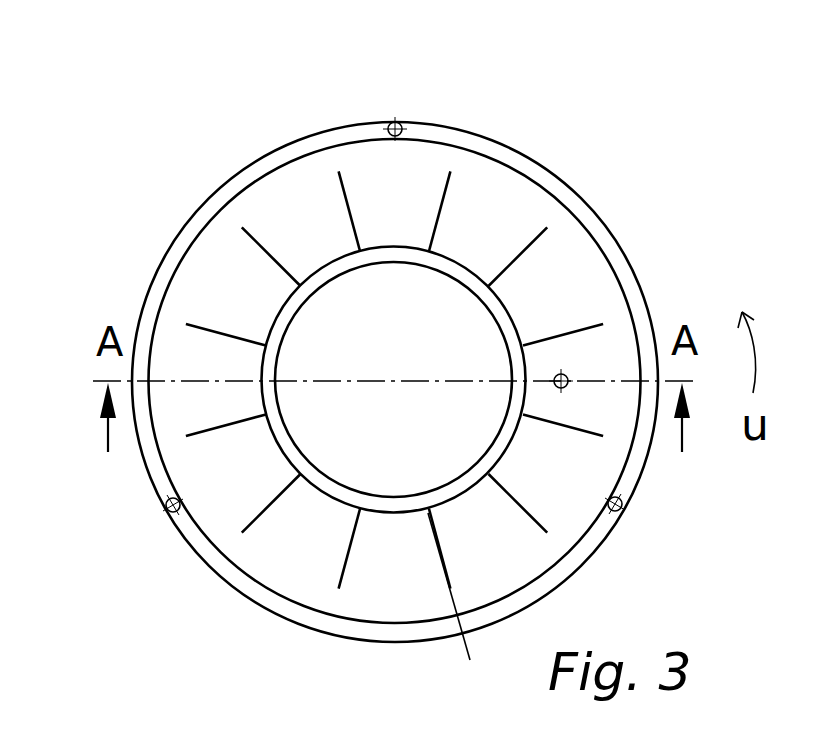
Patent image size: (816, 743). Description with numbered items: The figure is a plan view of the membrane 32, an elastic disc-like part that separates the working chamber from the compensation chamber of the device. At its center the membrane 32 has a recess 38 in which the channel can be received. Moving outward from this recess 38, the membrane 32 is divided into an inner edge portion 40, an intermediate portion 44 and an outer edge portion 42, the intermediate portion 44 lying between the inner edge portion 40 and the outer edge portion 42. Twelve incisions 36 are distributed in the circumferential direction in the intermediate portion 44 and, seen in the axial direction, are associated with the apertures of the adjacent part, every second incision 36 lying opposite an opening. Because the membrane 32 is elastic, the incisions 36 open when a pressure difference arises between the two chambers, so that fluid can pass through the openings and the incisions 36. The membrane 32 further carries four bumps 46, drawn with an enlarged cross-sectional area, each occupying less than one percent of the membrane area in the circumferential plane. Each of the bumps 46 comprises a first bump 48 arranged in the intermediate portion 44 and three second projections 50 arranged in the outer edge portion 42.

The membrane 32 is at (201, 203).
The incisions 36 is at (506, 268).
The recess 38 is at (345, 437).
The inner edge portion 40 is at (337, 268).
The outer edge portion 42 is at (618, 257).
The intermediate portion 44 is at (423, 162).
The bumps 46 is at (622, 505).
The first bump 48 is at (563, 373).
The second projections 50 is at (170, 508).